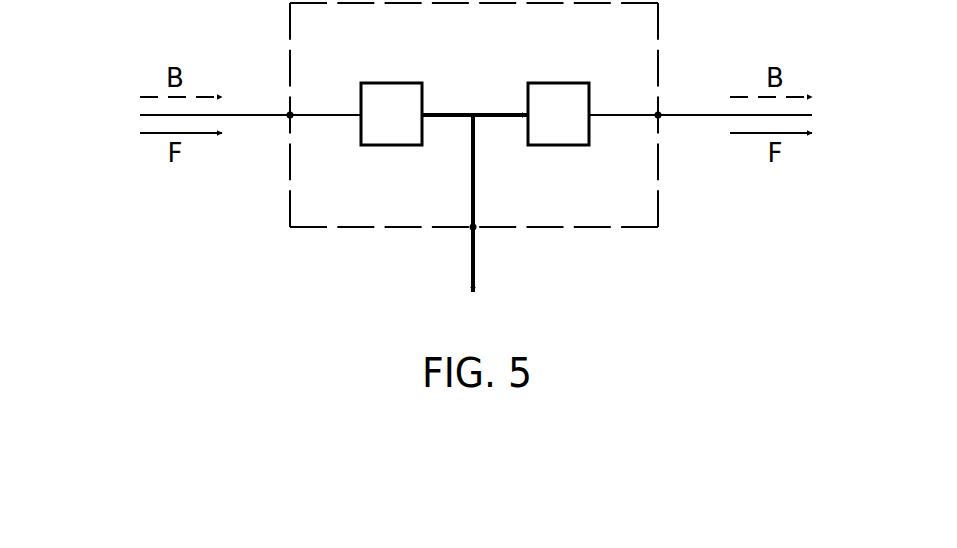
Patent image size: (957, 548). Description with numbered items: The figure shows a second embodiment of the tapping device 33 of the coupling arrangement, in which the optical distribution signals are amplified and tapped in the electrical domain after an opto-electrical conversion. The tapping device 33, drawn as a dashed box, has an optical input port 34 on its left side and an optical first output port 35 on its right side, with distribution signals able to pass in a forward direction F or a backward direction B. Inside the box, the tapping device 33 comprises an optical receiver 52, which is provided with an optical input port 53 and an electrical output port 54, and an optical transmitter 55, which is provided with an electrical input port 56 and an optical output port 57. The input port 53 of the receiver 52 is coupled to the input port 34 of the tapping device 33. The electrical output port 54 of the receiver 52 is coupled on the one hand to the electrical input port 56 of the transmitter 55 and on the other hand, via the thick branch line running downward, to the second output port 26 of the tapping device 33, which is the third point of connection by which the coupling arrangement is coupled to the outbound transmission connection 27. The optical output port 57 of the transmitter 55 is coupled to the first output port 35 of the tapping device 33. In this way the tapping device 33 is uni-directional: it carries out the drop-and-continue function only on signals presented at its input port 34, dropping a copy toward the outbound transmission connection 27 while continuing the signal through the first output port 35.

The third point of connection 26 is at (475, 229).
The outbound transmission connection 27 is at (472, 258).
The tapping device 33 is at (355, 228).
The optical input port 34 is at (286, 118).
The optical first output port 35 is at (660, 118).
The optical receiver 52 is at (391, 82).
The optical input port 53 is at (334, 113).
The electrical output port 54 is at (446, 113).
The optical transmitter 55 is at (557, 82).
The electrical input port 56 is at (491, 113).
The optical output port 57 is at (632, 113).